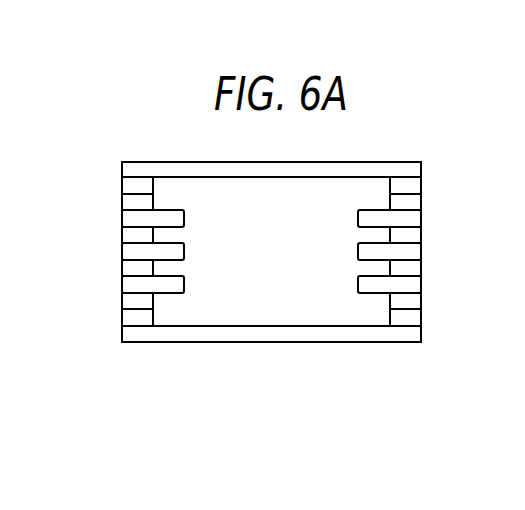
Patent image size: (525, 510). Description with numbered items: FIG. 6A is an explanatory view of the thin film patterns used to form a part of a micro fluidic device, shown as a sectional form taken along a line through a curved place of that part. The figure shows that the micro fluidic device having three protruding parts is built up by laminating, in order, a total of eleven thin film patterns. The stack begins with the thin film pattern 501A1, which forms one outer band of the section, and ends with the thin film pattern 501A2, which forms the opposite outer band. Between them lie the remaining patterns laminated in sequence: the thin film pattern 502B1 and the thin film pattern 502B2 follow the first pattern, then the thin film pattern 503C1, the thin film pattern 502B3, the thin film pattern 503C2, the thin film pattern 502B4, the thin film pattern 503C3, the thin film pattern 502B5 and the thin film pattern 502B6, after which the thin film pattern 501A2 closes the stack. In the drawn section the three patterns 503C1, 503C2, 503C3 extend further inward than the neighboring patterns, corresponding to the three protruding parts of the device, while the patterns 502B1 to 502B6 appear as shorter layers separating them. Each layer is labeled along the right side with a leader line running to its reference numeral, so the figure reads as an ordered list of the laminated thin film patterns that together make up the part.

The thin film pattern 501A1 is at (421, 168).
The thin film pattern 501A2 is at (421, 336).
The thin film pattern 502B1 is at (410, 186).
The thin film pattern 502B2 is at (410, 202).
The thin film pattern 502B3 is at (410, 235).
The thin film pattern 502B4 is at (410, 268).
The thin film pattern 502B5 is at (410, 301).
The thin film pattern 502B6 is at (410, 317).
The thin film pattern 503C1 is at (410, 219).
The thin film pattern 503C2 is at (410, 251).
The thin film pattern 503C3 is at (410, 284).